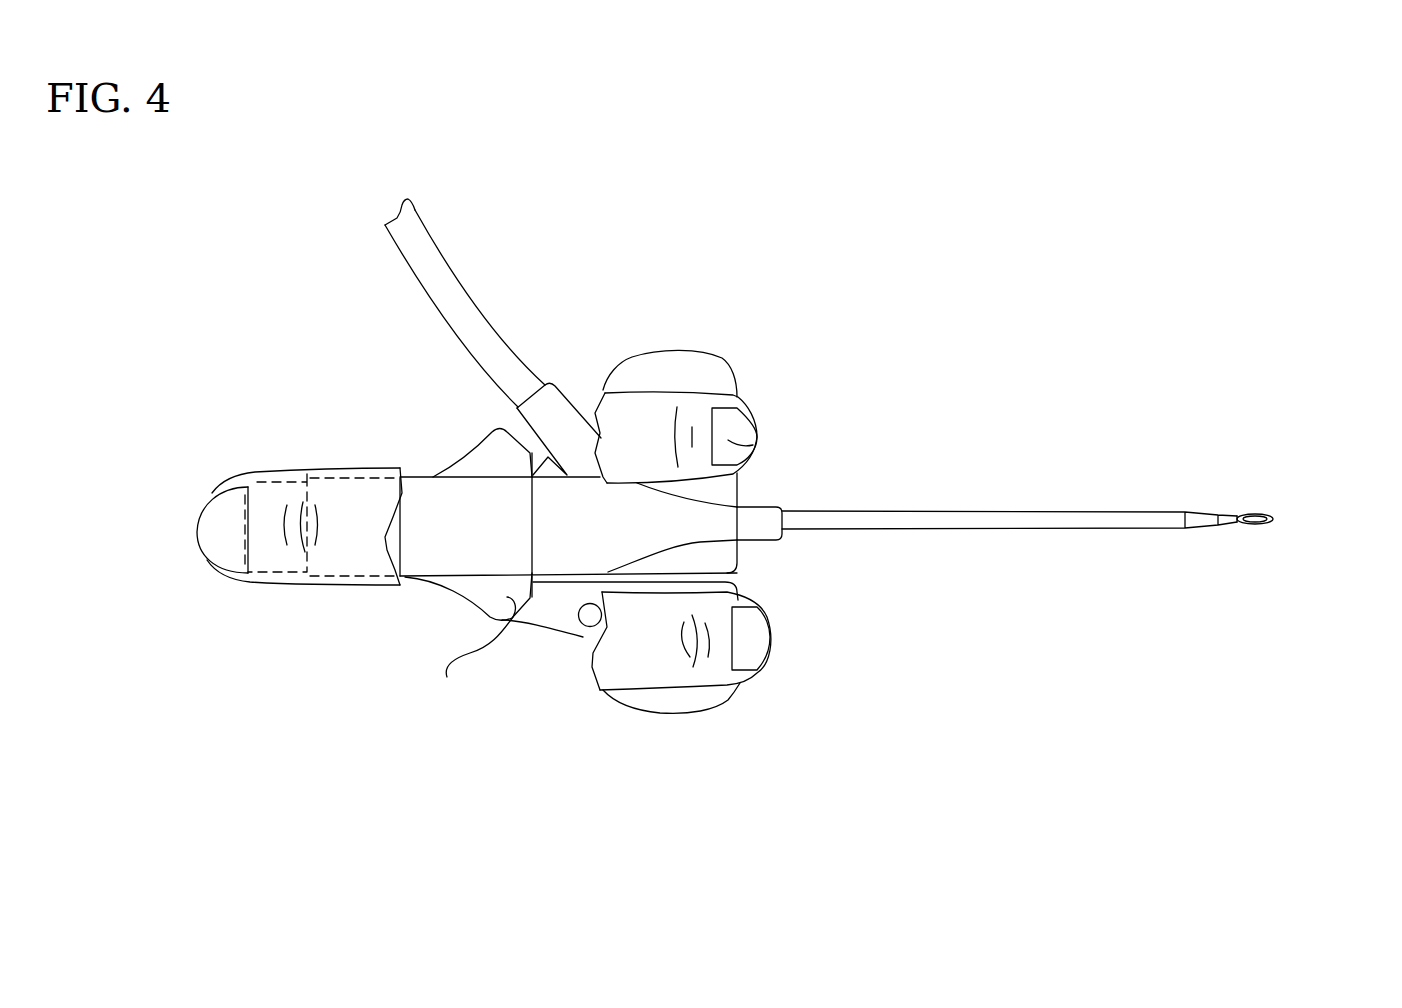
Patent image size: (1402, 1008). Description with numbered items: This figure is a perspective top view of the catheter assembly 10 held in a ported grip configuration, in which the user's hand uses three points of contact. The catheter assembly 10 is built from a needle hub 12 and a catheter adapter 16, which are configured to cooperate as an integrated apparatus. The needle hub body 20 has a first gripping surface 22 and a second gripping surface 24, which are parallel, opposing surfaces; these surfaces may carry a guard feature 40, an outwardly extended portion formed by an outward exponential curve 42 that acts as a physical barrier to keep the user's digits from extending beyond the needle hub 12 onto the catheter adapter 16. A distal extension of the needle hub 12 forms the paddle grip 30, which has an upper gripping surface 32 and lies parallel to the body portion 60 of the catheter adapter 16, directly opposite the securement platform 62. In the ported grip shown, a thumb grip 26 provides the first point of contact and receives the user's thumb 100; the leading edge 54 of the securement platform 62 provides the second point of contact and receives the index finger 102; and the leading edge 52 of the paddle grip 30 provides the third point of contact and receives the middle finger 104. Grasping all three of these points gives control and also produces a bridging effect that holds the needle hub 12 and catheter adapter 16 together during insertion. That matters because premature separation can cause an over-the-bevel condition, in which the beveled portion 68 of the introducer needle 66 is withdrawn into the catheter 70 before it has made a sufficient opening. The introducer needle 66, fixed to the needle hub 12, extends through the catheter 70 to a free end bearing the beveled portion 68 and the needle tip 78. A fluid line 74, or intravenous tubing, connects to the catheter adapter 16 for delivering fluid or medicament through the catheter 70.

The catheter assembly 10 is at (1207, 729).
The needle hub 12 is at (481, 596).
The catheter adapter 16 is at (783, 507).
The needle hub body 20 is at (384, 470).
The first gripping surface 22 is at (423, 530).
The second gripping surface 24 is at (408, 581).
The thumb grip 26 is at (207, 561).
The paddle grip 30 is at (737, 592).
The upper gripping surface 32 is at (583, 638).
The guard feature 40 is at (505, 445).
The outward exponential curve 42 is at (462, 463).
The leading edge of the paddle grip 52 is at (740, 692).
The leading edge of the securement platform 54 is at (737, 383).
The body portion 60 is at (653, 522).
The securement platform 62 is at (695, 371).
The introducer needle 66 is at (1227, 514).
The beveled portion 68 is at (1263, 514).
The catheter 70 is at (1093, 513).
The fluid line 74 is at (432, 265).
The needle tip 78 is at (1237, 524).
The thumb 100 is at (209, 503).
The index finger 102 is at (728, 438).
The middle finger 104 is at (770, 653).